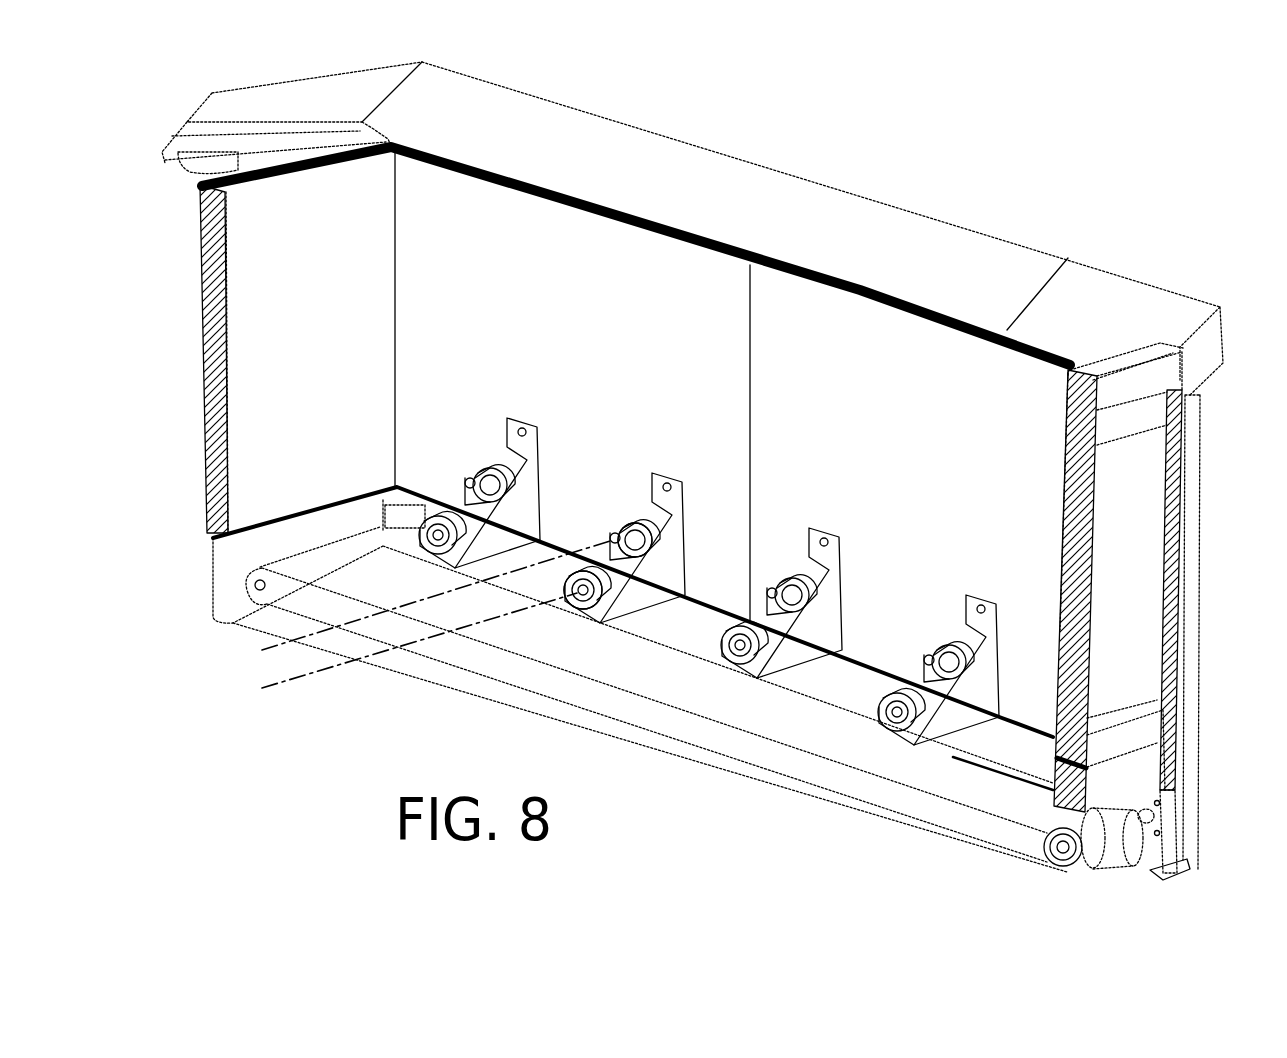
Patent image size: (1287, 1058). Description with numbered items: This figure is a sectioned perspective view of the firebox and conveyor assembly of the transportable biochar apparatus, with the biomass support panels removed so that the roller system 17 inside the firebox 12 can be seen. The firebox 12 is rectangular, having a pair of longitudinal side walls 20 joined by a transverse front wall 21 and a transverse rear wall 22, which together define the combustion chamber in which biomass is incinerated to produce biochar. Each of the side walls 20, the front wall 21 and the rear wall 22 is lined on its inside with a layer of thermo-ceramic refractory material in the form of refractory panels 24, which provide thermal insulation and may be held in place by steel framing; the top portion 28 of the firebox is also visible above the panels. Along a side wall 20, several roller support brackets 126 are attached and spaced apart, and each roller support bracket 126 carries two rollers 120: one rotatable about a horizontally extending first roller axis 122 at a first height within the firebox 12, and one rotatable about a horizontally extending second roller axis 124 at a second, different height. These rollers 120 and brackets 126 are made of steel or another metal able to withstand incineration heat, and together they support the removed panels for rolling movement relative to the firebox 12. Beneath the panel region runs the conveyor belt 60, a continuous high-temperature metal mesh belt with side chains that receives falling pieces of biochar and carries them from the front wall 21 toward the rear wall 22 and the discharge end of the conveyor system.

The firebox 12 is at (978, 165).
The roller system 17 is at (925, 477).
The longitudinal side wall 20 is at (800, 310).
The transverse front wall 21 is at (205, 330).
The transverse rear wall 22 is at (1143, 493).
The refractory panel 24 is at (333, 338).
The top cover 28 is at (755, 195).
The conveyor belt 60 is at (600, 660).
The roller 120 is at (628, 517).
The first roller axis 122 is at (290, 645).
The second roller axis 124 is at (290, 685).
The roller support bracket 126 is at (527, 500).